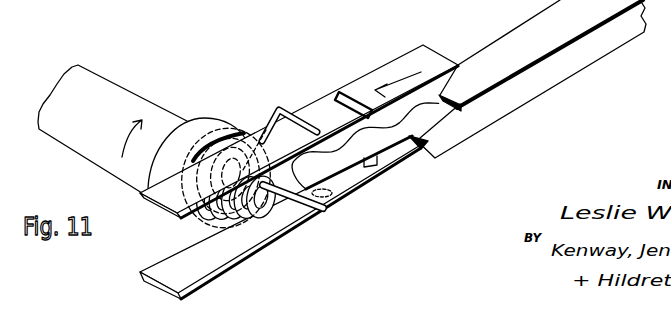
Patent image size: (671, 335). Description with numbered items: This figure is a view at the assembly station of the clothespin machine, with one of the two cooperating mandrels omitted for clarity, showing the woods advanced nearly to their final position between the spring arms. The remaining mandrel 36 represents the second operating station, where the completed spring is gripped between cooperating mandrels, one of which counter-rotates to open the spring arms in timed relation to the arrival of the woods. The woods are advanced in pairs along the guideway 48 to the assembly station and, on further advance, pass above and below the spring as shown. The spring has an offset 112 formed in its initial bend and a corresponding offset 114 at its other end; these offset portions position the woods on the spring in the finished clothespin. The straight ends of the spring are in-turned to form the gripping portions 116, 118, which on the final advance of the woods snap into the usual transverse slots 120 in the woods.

The mandrel 36 is at (130, 88).
The guideway 48 is at (582, 27).
The offset 112 is at (200, 240).
The offset 114 is at (263, 182).
The gripping portion 116 is at (309, 127).
The gripping portion 118 is at (330, 193).
The transverse slot 120 is at (337, 96).